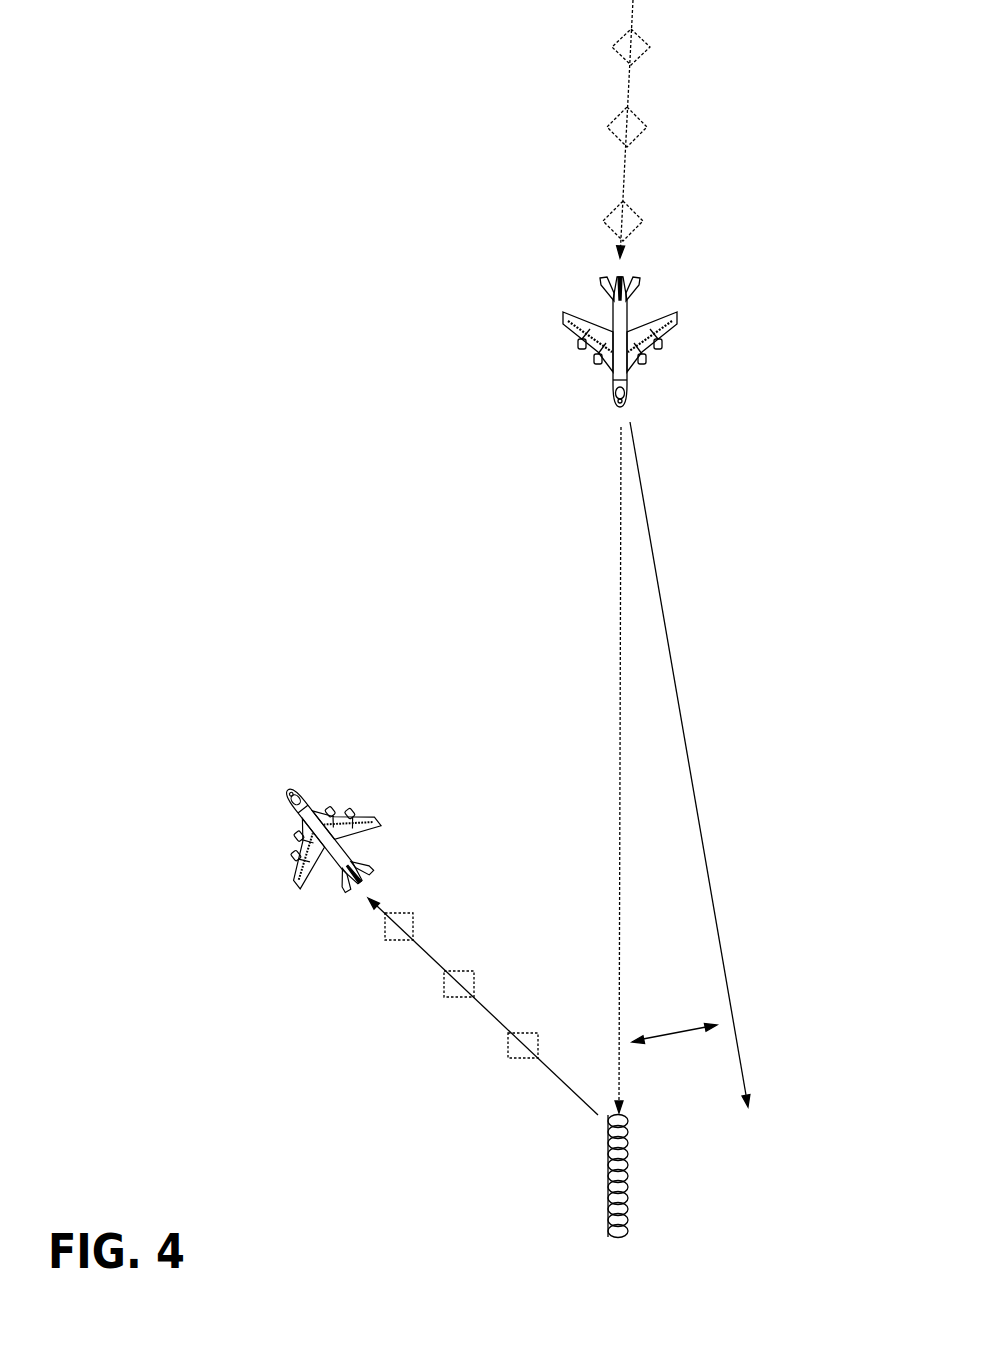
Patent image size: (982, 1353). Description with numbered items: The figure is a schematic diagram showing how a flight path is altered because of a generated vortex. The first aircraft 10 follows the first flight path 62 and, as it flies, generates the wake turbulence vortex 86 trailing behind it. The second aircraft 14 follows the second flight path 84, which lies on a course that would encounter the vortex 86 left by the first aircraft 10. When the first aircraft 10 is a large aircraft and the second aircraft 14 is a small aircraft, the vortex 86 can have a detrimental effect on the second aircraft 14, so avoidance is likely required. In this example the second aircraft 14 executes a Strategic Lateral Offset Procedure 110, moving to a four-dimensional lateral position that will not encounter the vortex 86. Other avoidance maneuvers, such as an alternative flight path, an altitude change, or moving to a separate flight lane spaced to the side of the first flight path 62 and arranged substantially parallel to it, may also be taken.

The first aircraft 10 is at (316, 934).
The second aircraft 14 is at (684, 386).
The first flight path 62 is at (570, 1092).
The second flight path 84 is at (620, 652).
The wake turbulence vortex 86 is at (642, 1177).
The Strategic Lateral Offset Procedure (SLOP) 110 is at (707, 860).